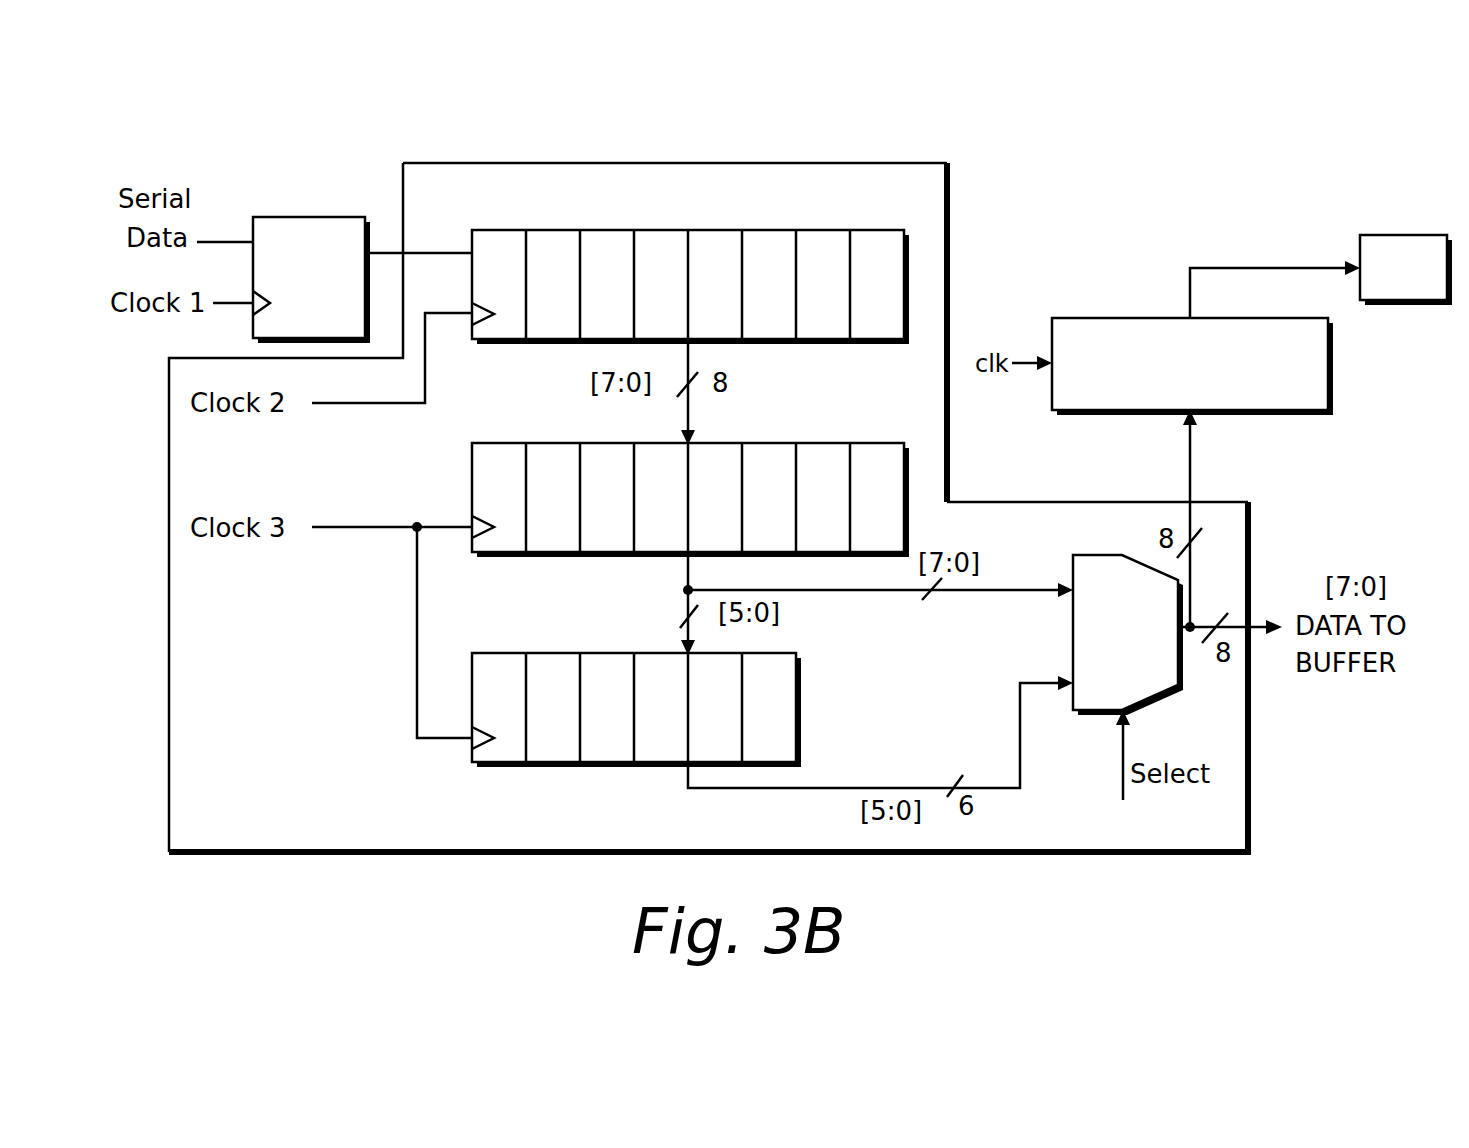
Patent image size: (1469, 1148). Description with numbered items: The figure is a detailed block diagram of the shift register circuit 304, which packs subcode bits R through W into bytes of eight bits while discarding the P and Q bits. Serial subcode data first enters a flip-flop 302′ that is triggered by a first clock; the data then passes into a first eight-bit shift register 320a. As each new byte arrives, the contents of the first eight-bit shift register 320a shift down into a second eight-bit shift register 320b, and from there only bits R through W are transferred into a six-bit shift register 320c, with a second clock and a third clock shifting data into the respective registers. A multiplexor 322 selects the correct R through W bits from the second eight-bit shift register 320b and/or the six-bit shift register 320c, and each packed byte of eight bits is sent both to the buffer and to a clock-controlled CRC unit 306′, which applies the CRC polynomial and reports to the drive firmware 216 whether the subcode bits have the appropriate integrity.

The flip-flop 302′ is at (300, 217).
The shift register circuit 304 is at (718, 163).
The CRC unit 306′ is at (1095, 318).
The drive firmware 216 is at (1378, 287).
The first 8-bit shift register 320a is at (568, 370).
The second 8-bit shift register 320b is at (568, 575).
The 6-bit shift register 320c is at (568, 784).
The multiplexor 322 is at (1073, 633).